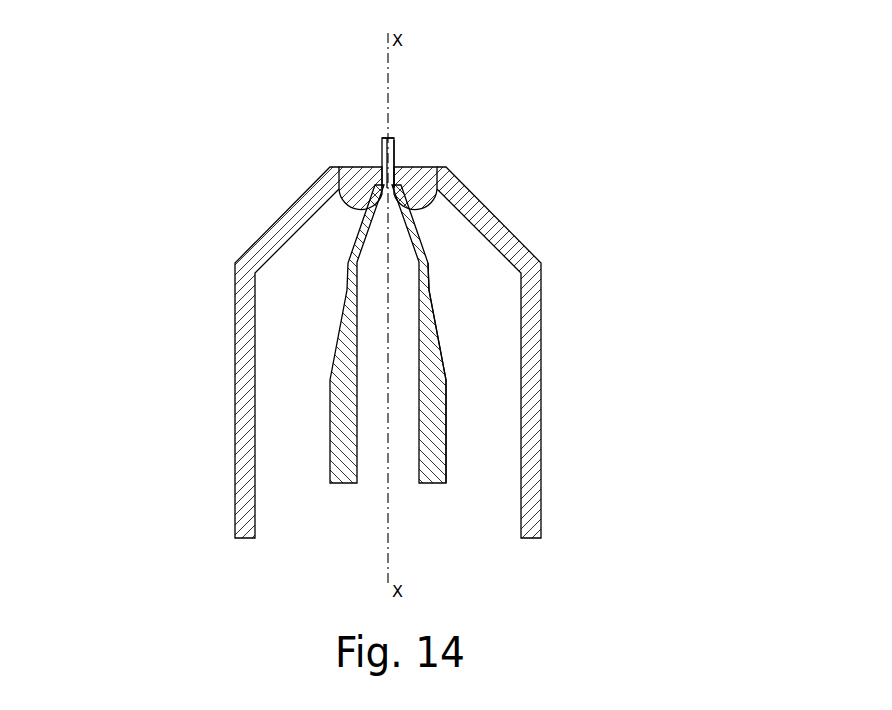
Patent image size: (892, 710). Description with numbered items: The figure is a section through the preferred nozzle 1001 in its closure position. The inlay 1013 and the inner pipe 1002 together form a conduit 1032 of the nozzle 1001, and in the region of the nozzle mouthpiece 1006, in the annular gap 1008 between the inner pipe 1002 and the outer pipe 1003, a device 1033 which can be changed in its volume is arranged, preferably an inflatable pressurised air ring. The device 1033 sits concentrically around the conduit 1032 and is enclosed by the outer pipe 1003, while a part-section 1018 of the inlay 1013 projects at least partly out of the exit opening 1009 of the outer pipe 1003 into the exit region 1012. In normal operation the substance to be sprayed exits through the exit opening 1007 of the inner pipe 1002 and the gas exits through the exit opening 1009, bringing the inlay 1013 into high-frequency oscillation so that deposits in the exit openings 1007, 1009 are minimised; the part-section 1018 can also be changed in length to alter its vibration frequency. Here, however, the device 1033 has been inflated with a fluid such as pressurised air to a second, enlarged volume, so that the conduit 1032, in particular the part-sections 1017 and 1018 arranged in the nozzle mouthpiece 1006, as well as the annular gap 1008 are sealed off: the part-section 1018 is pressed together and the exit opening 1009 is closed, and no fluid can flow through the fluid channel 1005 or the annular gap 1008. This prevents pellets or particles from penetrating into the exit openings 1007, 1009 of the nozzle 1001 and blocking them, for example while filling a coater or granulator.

The nozzle 1001 is at (213, 108).
The inner pipe 1002 is at (432, 472).
The outer pipe 1003 is at (528, 527).
The fluid channel 1005 is at (372, 470).
The nozzle mouthpiece 1006 is at (217, 128).
The exit opening of the inner pipe 1007 is at (380, 133).
The annular gap 1008 is at (511, 313).
The exit opening of the outer pipe 1009 is at (363, 148).
The exit region 1012 is at (431, 119).
The inlay 1013 is at (393, 153).
The part-section of the conduit 1017 is at (353, 242).
The part-section of the inlay 1018 is at (403, 158).
The conduit 1032 is at (457, 403).
The device changeable in its volume 1033 is at (427, 210).